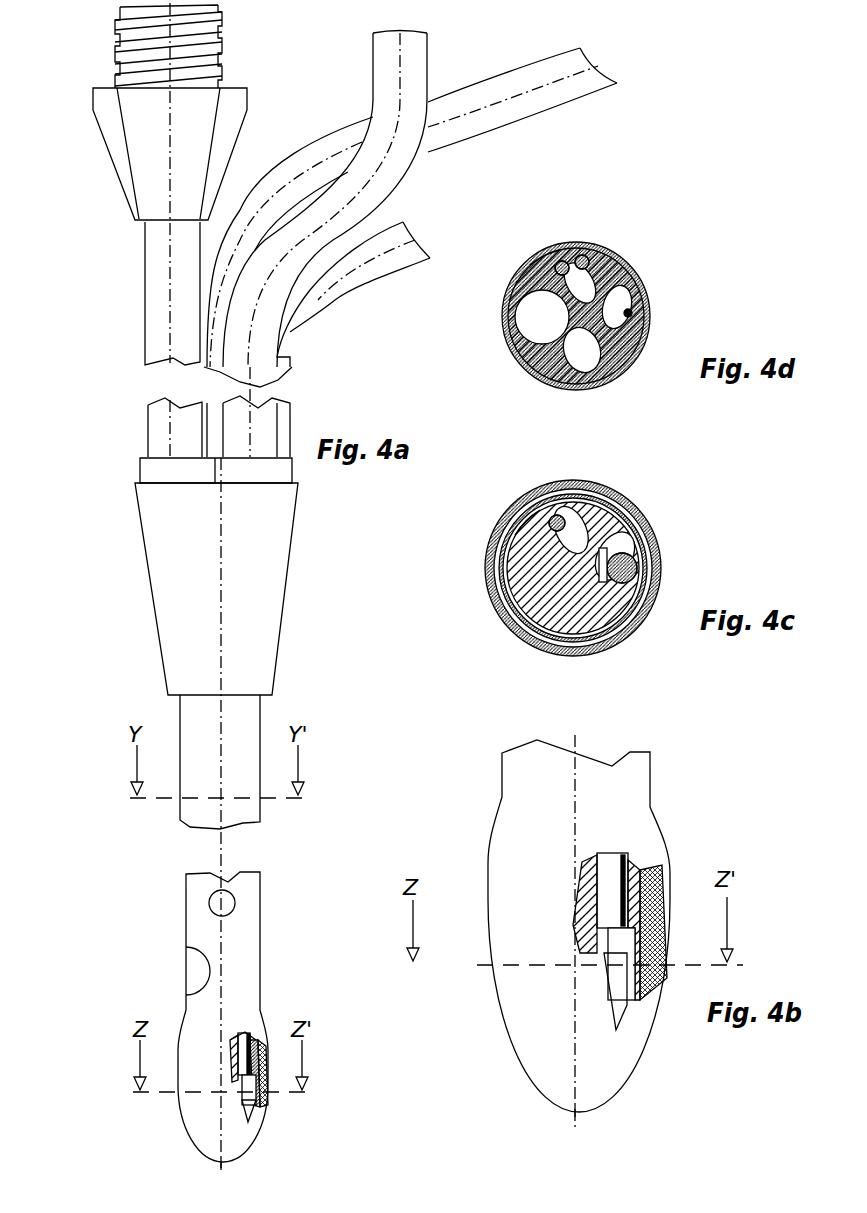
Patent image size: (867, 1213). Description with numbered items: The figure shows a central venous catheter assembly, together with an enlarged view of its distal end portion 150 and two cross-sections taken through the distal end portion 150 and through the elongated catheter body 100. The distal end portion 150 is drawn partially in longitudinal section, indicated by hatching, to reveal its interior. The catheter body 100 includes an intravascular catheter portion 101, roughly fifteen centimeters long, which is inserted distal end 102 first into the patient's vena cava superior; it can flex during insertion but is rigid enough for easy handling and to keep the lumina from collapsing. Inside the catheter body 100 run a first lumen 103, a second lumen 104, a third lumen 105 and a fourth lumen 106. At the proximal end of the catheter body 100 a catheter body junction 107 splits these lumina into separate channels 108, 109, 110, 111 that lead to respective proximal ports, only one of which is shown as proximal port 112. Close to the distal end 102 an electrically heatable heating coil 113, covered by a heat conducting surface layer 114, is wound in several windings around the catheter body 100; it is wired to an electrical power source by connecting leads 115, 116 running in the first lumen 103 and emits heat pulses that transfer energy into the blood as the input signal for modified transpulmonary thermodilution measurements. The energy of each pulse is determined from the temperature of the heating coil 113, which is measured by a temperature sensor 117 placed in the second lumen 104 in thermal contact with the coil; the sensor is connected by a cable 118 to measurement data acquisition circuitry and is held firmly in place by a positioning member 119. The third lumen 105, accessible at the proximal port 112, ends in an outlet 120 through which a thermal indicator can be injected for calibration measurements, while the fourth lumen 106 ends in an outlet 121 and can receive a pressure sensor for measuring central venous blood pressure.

In FIG. 4A, the elongated catheter body 100 is at (238, 708).
In FIG. 4D, the elongated catheter body 100 is at (625, 372).
In FIG. 4C, the elongated catheter body 100 is at (505, 568).
In FIG. 4A, the intravascular catheter portion 101 is at (250, 883).
In FIG. 4A, the distal end 102 is at (232, 1160).
In FIG. 4B, the distal end 102 is at (575, 1110).
In FIG. 4D, the first lumen 103 is at (582, 277).
In FIG. 4C, the first lumen 103 is at (597, 490).
In FIG. 4D, the second lumen 104 is at (623, 298).
In FIG. 4C, the second lumen 104 is at (615, 545).
In FIG. 4D, the third lumen 105 is at (530, 328).
In FIG. 4D, the fourth lumen 106 is at (548, 387).
In FIG. 4A, the catheter body junction 107 is at (173, 567).
In FIG. 4A, the separated channel 108 is at (530, 127).
In FIG. 4A, the separated channel 109 is at (385, 273).
In FIG. 4A, the separated channel 110 is at (155, 256).
In FIG. 4A, the separated channel 111 is at (422, 64).
In FIG. 4A, the proximal port 112 is at (204, 92).
In FIG. 4A, the heating coil 113 is at (268, 1095).
In FIG. 4C, the heating coil 113 is at (495, 601).
In FIG. 4B, the heating coil 113 is at (648, 985).
In FIG. 4A, the heat conducting surface layer 114 is at (265, 1045).
In FIG. 4D, the heat conducting surface layer 114 is at (553, 265).
In FIG. 4C, the heat conducting surface layer 114 is at (522, 512).
In FIG. 4B, the heat conducting surface layer 114 is at (660, 868).
In FIG. 4D, the connecting lead 115 is at (593, 243).
In FIG. 4D, the connecting lead 116 is at (562, 260).
In FIG. 4C, the connecting lead 116 is at (555, 512).
In FIG. 4A, the temperature sensor 117 is at (260, 1112).
In FIG. 4C, the temperature sensor 117 is at (662, 556).
In FIG. 4B, the temperature sensor 117 is at (619, 1003).
In FIG. 4A, the cable 118 is at (248, 1035).
In FIG. 4D, the cable 118 is at (650, 313).
In FIG. 4B, the cable 118 is at (620, 853).
In FIG. 4A, the positioning member 119 is at (237, 1080).
In FIG. 4C, the positioning member 119 is at (627, 637).
In FIG. 4B, the positioning member 119 is at (600, 950).
In FIG. 4A, the outlet 120 is at (193, 968).
In FIG. 4A, the outlet 121 is at (213, 893).
In FIG. 4A, the distal end portion 150 is at (203, 1118).
In FIG. 4B, the distal end portion 150 is at (530, 1015).